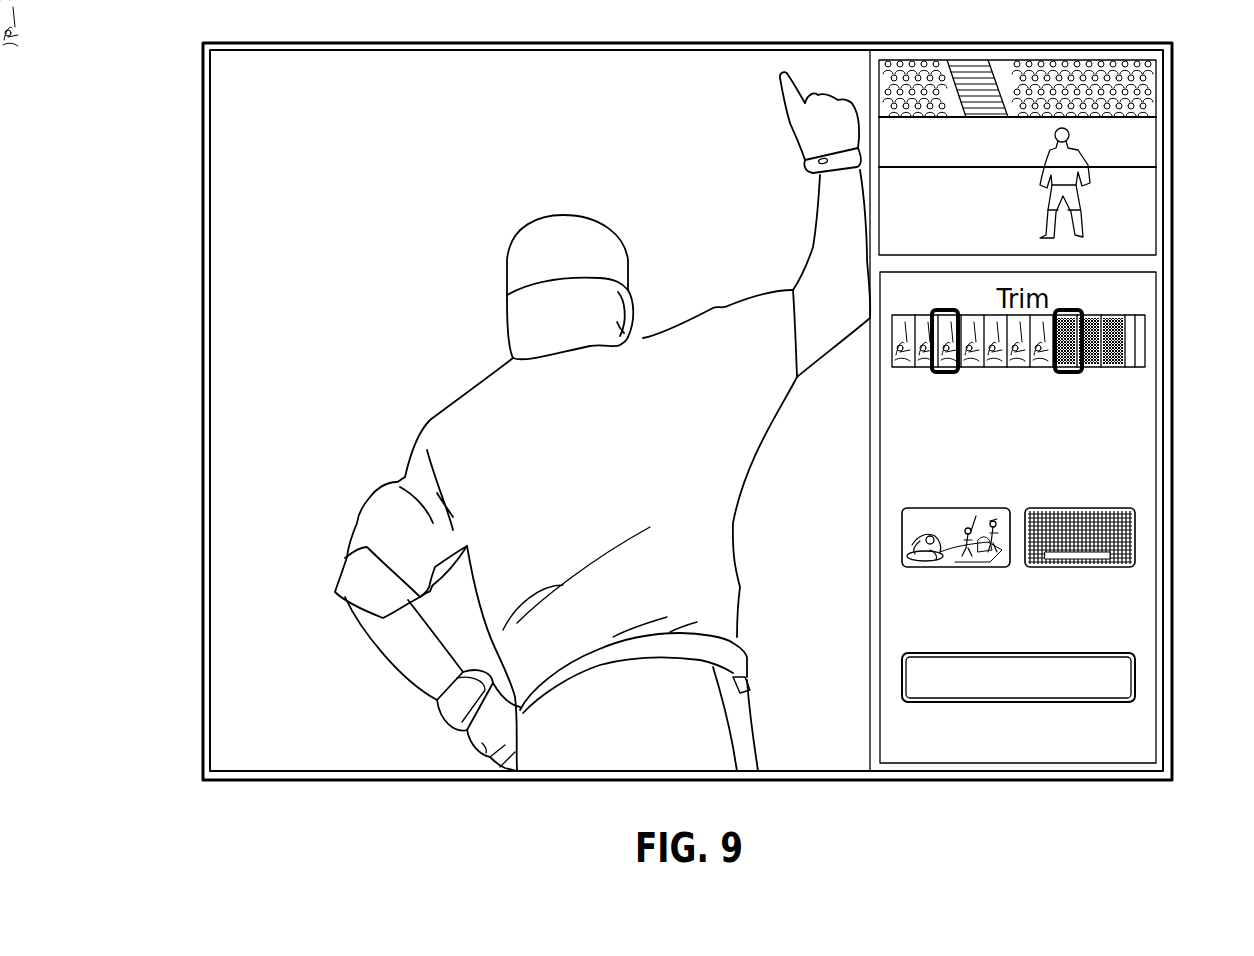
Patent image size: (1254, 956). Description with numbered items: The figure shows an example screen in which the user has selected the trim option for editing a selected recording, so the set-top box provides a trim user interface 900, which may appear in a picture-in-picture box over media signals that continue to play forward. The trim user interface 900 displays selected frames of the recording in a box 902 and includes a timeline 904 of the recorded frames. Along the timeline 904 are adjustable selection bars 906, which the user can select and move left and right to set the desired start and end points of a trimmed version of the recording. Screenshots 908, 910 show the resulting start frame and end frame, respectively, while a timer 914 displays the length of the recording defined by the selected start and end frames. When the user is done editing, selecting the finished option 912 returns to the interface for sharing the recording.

The trim user interface 900 is at (1156, 473).
The box 902 is at (1156, 220).
The timeline 904 is at (1145, 352).
The adjustable selection bars 906 is at (932, 372).
The screenshot 908 is at (903, 530).
The screenshot 910 is at (1133, 545).
The finished option 912 is at (1168, 680).
The timer 914 is at (983, 390).